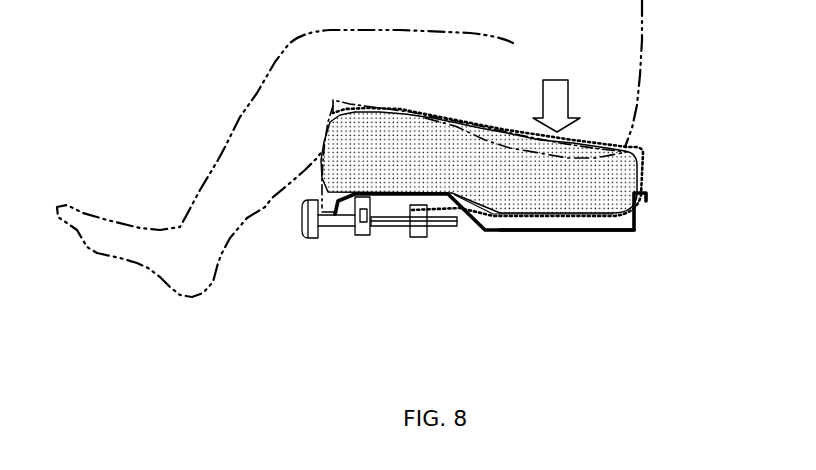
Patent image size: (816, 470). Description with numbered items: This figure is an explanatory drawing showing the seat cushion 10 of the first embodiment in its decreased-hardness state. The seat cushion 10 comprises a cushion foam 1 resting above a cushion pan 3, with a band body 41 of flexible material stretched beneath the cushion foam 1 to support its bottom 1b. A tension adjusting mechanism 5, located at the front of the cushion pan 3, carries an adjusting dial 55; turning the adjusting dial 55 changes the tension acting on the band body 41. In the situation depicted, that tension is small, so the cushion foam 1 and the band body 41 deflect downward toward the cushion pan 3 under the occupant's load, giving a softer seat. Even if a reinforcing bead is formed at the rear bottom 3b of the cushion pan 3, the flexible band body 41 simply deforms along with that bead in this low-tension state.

The seat cushion 10 is at (651, 135).
The cushion foam 1 is at (622, 175).
The bottom of the cushion foam 1b is at (504, 216).
The band body 41 is at (518, 217).
The cushion pan 3 is at (650, 229).
The rear bottom of the cushion pan 3b is at (612, 232).
The tension adjusting mechanism 5 is at (362, 267).
The adjusting dial 55 is at (312, 239).